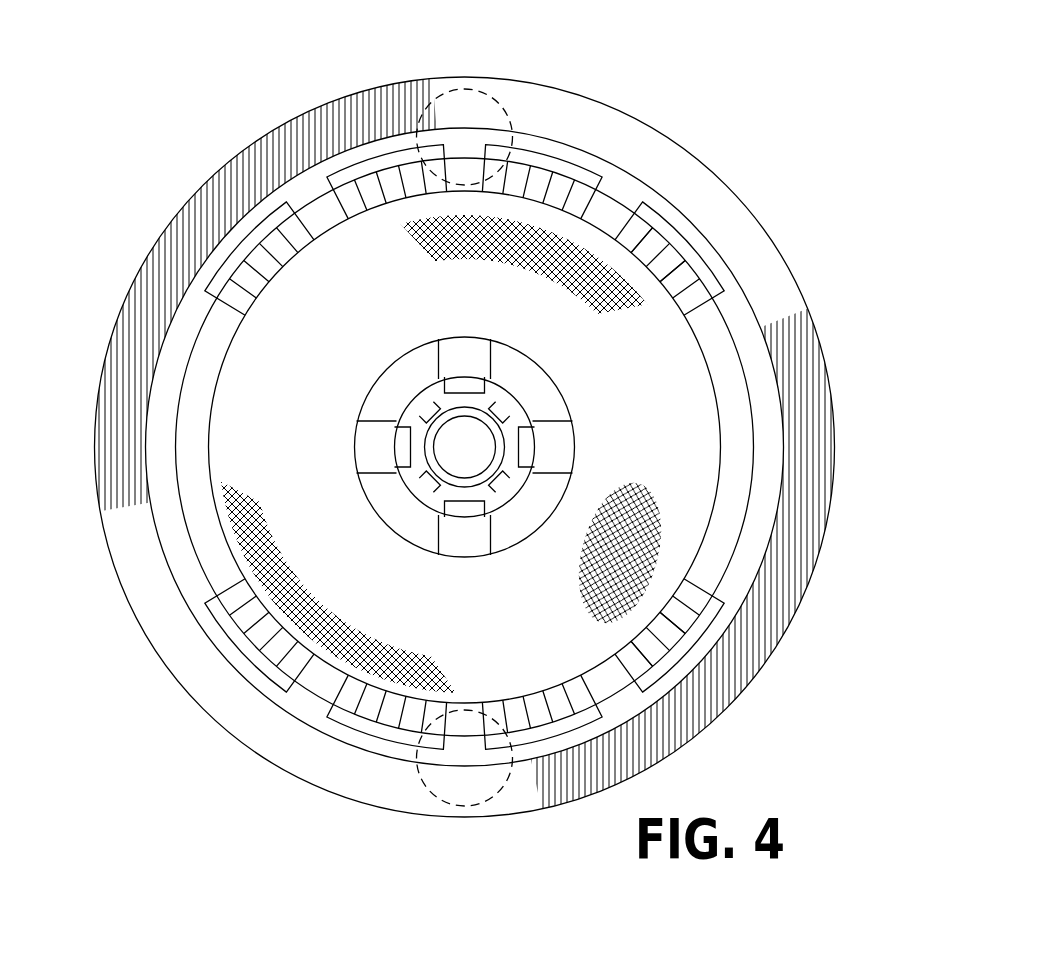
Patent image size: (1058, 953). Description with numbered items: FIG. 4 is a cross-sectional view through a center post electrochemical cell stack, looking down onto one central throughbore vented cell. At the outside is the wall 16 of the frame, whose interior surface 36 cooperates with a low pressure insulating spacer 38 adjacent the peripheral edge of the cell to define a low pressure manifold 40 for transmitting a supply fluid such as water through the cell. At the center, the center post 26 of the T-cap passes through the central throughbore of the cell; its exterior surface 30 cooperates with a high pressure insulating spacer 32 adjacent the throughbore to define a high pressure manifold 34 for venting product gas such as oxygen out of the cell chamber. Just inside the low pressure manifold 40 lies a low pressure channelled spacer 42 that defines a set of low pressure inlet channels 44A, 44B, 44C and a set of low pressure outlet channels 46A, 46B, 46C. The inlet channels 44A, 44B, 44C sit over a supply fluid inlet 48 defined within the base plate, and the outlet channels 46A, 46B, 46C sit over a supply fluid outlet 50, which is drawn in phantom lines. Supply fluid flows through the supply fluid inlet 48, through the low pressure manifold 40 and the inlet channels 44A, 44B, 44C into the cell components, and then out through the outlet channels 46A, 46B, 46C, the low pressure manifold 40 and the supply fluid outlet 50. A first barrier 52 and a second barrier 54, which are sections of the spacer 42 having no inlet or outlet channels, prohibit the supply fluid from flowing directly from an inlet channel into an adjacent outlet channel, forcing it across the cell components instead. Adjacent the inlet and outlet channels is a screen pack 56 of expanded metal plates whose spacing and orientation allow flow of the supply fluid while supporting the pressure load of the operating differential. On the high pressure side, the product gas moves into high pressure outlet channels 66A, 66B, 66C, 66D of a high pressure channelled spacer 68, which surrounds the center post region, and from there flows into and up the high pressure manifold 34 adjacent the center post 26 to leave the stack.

The wall 16 is at (820, 380).
The center post 26 is at (473, 440).
The exterior surface 30 is at (487, 458).
The high pressure insulating spacer 32 is at (397, 452).
The high pressure manifold 34 is at (405, 484).
The interior surface 36 is at (167, 523).
The low pressure insulating spacer 38 is at (190, 593).
The low pressure manifold 40 is at (365, 166).
The low pressure channelled spacer 42 is at (190, 458).
The low pressure inlet channel 44A is at (703, 602).
The low pressure inlet channel 44B is at (670, 632).
The low pressure inlet channel 44C is at (645, 657).
The low pressure outlet channel 46A is at (745, 267).
The low pressure outlet channel 46B is at (690, 238).
The low pressure outlet channel 46C is at (642, 212).
The supply fluid inlet 48 is at (458, 782).
The supply fluid outlet 50 is at (484, 117).
The first barrier 52 is at (186, 386).
The second barrier 54 is at (734, 356).
The screen pack 56 is at (680, 483).
The high pressure outlet channel 66A is at (467, 355).
The high pressure outlet channel 66B is at (558, 450).
The high pressure outlet channel 66C is at (465, 542).
The high pressure outlet channel 66D is at (376, 449).
The high pressure channelled spacer 68 is at (509, 354).